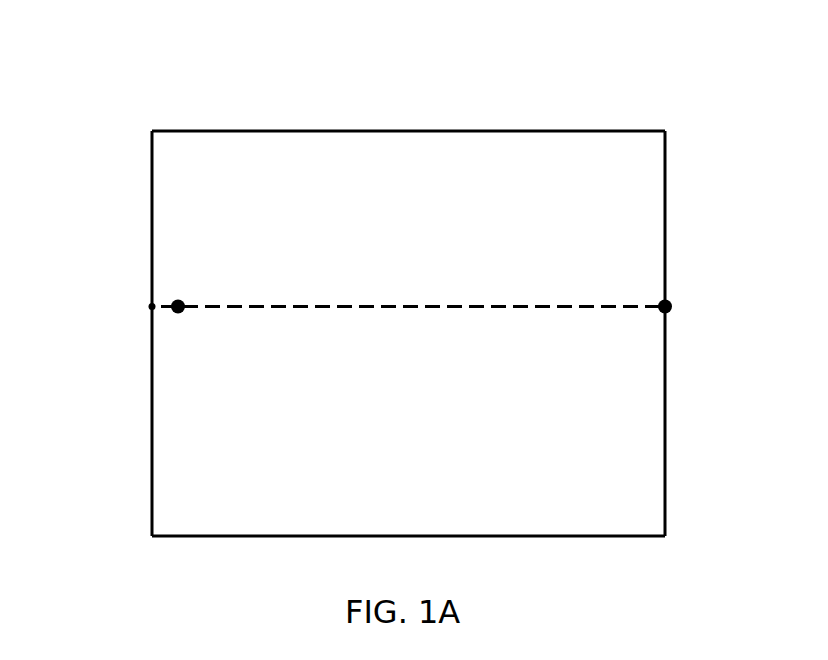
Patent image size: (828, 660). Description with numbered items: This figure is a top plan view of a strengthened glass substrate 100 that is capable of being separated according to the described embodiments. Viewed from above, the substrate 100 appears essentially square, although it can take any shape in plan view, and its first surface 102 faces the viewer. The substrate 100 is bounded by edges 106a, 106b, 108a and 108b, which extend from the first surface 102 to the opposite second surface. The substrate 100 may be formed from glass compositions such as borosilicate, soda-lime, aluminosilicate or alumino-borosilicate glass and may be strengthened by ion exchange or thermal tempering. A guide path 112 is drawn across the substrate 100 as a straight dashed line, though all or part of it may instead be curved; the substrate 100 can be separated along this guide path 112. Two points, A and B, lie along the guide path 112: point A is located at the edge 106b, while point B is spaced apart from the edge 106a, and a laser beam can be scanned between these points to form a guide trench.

The strengthened glass substrate 100 is at (472, 113).
The first surface 102 is at (409, 334).
The edge 106a is at (146, 228).
The edge 106b is at (676, 228).
The edge 108a is at (586, 124).
The edge 108b is at (589, 545).
The guide path 112 is at (227, 308).